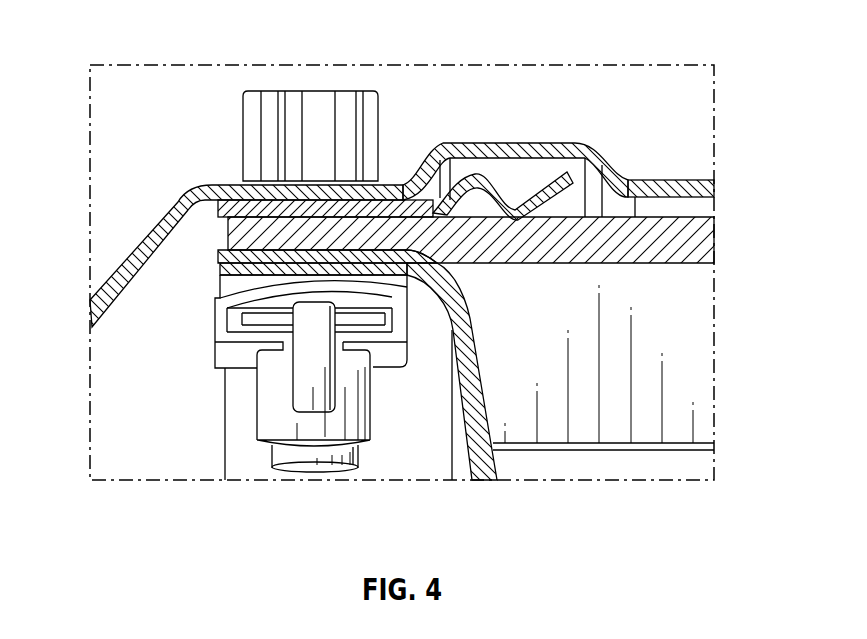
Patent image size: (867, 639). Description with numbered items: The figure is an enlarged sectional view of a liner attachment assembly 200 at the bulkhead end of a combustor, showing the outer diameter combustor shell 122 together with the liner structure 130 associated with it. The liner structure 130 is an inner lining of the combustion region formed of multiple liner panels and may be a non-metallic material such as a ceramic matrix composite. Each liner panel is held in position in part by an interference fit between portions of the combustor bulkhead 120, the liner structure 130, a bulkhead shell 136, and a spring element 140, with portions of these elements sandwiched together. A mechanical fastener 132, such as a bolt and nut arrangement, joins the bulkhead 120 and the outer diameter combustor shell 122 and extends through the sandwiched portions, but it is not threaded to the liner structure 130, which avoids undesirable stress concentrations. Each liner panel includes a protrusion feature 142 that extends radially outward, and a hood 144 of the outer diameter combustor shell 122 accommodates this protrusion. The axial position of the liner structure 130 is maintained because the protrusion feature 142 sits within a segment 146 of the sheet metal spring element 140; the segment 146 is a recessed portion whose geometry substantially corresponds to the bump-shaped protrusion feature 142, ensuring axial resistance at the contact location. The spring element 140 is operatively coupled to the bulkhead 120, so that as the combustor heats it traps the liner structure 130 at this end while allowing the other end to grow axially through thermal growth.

The liner attachment assembly 200 is at (120, 122).
The bulkhead 120 is at (118, 278).
The outer diameter combustor shell 122 is at (648, 187).
The liner structure 130 is at (712, 252).
The fastener 132 is at (326, 91).
The bulkhead shell 136 is at (478, 483).
The spring element 140 is at (243, 200).
The protrusion feature 142 is at (498, 190).
The hood 144 is at (508, 152).
The segment 146 is at (434, 146).